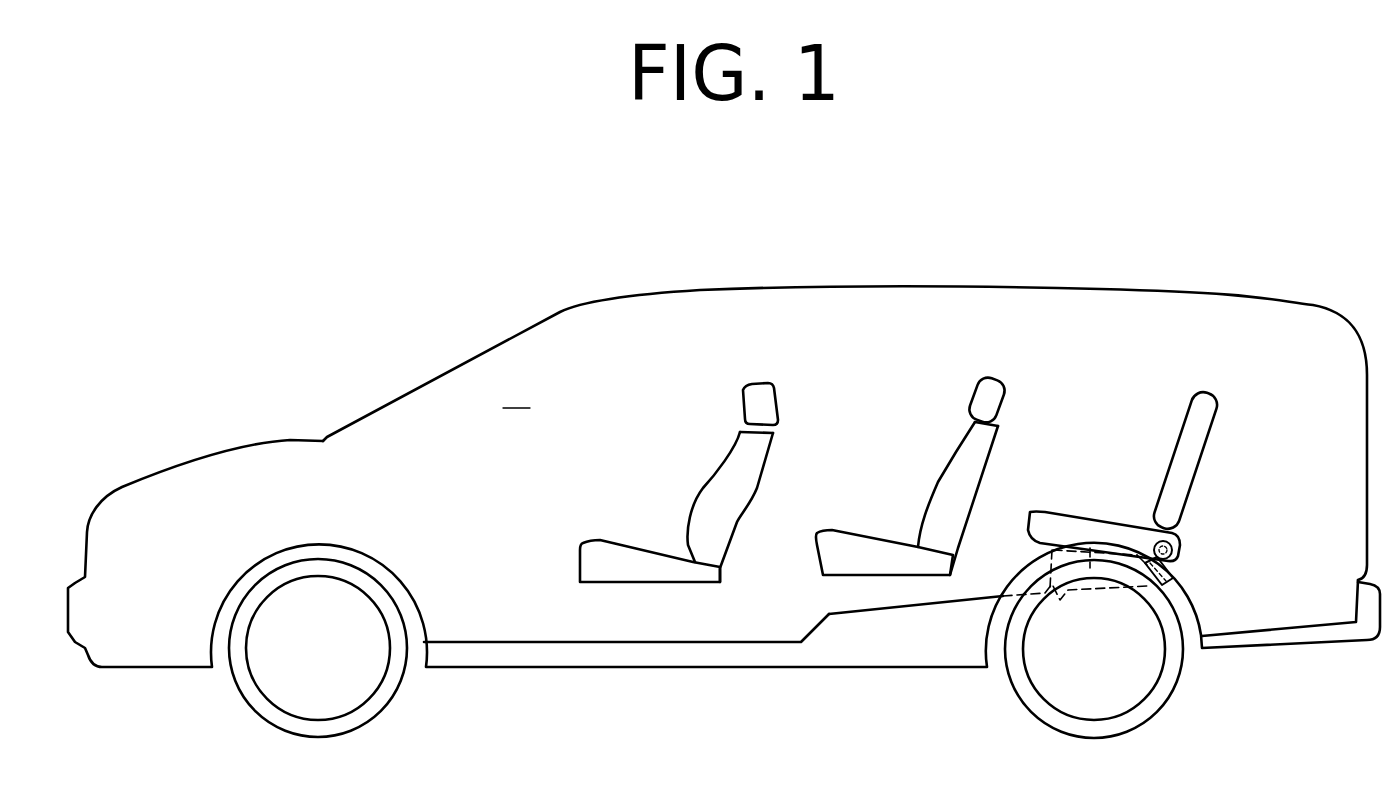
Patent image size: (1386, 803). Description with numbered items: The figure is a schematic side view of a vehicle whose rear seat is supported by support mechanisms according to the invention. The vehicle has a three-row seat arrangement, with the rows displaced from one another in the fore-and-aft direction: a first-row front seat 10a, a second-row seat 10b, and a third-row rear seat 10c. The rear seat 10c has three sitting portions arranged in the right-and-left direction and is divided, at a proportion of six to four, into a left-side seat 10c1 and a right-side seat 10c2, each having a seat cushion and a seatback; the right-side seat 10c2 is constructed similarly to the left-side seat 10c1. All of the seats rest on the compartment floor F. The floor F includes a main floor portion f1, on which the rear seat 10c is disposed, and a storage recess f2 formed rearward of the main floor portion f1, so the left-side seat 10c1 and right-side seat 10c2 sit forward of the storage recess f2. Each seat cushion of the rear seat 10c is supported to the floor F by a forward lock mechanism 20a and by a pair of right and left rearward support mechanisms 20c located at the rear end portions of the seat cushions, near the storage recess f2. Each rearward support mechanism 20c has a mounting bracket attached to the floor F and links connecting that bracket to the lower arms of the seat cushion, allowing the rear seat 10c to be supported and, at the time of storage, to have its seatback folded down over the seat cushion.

The front seat 10a is at (733, 452).
The second-row seat 10b is at (962, 458).
The rear seat 10c is at (1161, 438).
The left-side seat 10c1 is at (1185, 460).
The right-side seat 10c2 is at (1104, 537).
The forward lock mechanism 20a is at (1072, 570).
The rearward support mechanism 20c is at (1175, 566).
The floor F is at (785, 637).
The main floor portion f1 is at (892, 602).
The storage recess f2 is at (1265, 624).